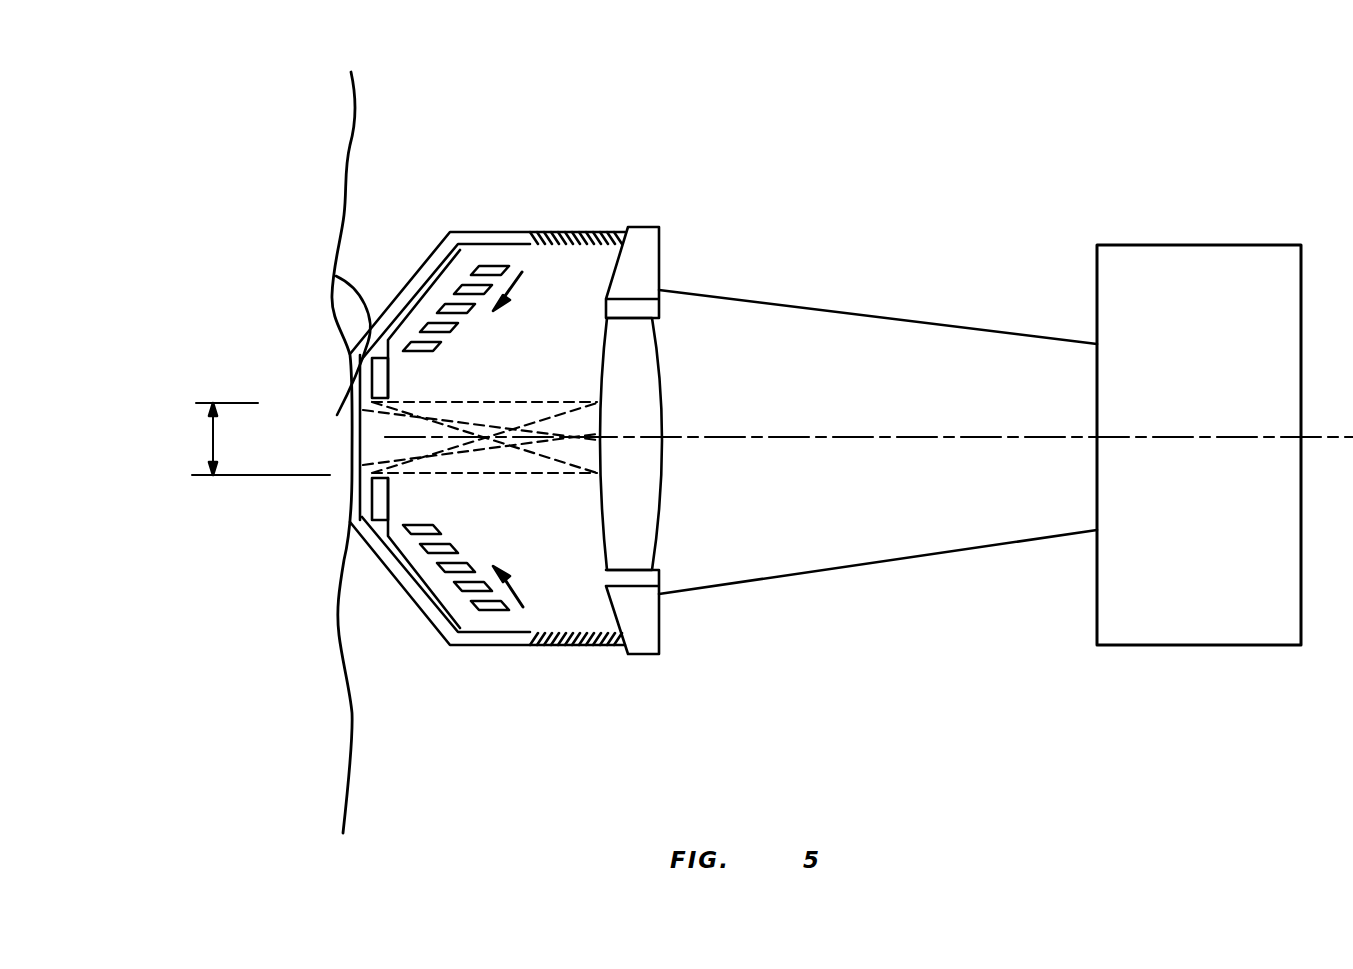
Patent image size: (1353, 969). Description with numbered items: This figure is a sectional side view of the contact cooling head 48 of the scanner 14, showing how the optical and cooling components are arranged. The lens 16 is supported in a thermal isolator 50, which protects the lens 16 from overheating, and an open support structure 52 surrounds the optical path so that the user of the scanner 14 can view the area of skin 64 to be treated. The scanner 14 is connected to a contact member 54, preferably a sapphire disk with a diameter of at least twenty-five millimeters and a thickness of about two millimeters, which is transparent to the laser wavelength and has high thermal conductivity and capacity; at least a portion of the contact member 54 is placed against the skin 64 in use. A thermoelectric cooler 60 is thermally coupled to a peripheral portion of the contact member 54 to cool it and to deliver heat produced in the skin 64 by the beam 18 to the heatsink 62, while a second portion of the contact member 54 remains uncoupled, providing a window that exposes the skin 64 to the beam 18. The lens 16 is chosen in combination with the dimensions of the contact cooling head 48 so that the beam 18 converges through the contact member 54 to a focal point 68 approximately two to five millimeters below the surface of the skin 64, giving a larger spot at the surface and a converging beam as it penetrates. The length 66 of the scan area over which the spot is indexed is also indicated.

The scanner 14 is at (855, 268).
The lens 16 is at (636, 520).
The beam 18 is at (851, 439).
The contact cooling head 48 is at (473, 165).
The thermal isolator 50 is at (641, 262).
The open support structure 52 is at (612, 228).
The contact member 54 is at (357, 305).
The thermoelectric cooler 60 is at (370, 402).
The heatsink 62 is at (441, 297).
The skin 64 is at (349, 137).
The length of the scan area 66 is at (213, 440).
The focal point 68 is at (352, 437).